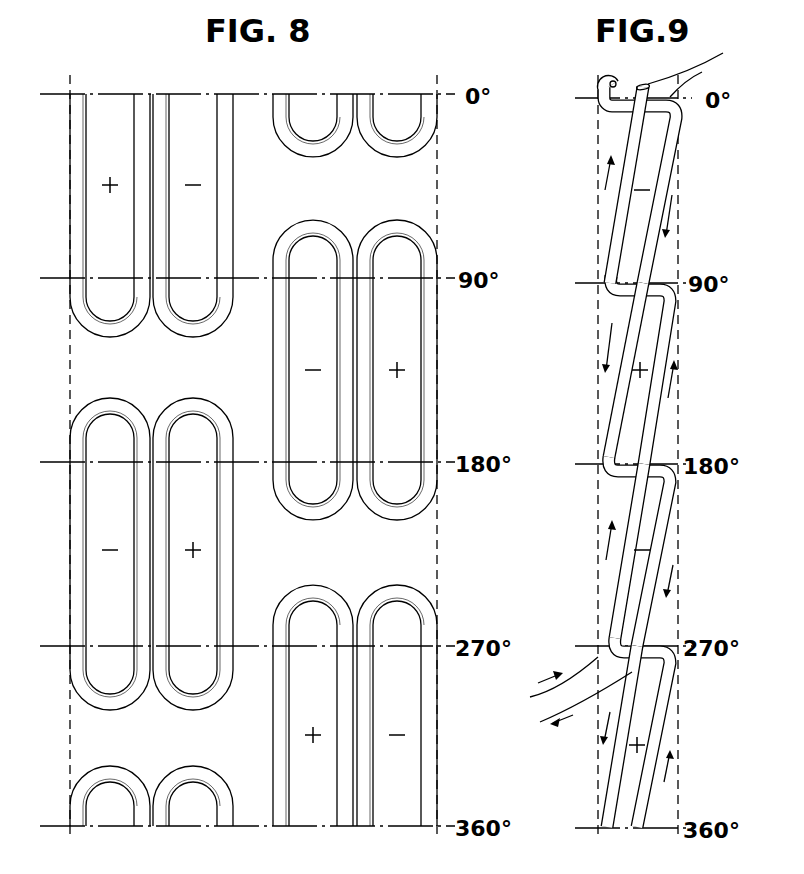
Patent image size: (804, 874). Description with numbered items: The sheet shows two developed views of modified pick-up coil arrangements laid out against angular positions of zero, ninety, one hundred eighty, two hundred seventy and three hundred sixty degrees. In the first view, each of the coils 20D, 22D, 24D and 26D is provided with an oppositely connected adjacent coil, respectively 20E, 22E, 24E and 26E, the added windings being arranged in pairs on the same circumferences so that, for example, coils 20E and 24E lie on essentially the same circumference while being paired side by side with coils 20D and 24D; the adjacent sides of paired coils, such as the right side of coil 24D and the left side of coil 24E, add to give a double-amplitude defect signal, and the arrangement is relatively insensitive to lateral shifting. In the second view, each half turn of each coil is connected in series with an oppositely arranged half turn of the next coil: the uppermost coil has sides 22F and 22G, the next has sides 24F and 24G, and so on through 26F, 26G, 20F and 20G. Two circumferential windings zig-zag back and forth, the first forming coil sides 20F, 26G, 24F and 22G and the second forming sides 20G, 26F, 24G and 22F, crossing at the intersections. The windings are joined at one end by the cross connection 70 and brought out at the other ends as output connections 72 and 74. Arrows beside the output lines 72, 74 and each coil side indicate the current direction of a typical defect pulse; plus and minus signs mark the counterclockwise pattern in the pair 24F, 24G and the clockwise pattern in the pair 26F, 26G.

In FIG. 8, the coil 20D is at (70, 147).
In FIG. 8, the oppositely connected adjacent coil 20E is at (232, 160).
In FIG. 8, the coil 22D is at (276, 344).
In FIG. 8, the oppositely connected adjacent coil 22E is at (436, 344).
In FIG. 8, the coil 24D is at (70, 505).
In FIG. 8, the oppositely connected adjacent coil 24E is at (233, 522).
In FIG. 8, the coil 26D is at (336, 152).
In FIG. 8, the oppositely connected adjacent coil 26E is at (398, 152).
In FIG. 9, the coil side 20F is at (612, 108).
In FIG. 9, the half coil 20G is at (668, 708).
In FIG. 9, the coil side 22F is at (614, 226).
In FIG. 9, the coil side 22G is at (668, 165).
In FIG. 9, the coil side 24F is at (613, 391).
In FIG. 9, the coil side 24G is at (675, 330).
In FIG. 9, the coil side 26F is at (613, 575).
In FIG. 9, the coil side 26G is at (679, 513).
In FIG. 9, the cross connection 70 is at (715, 62).
In FIG. 9, the output connection 72 is at (530, 697).
In FIG. 9, the output connection 74 is at (540, 722).